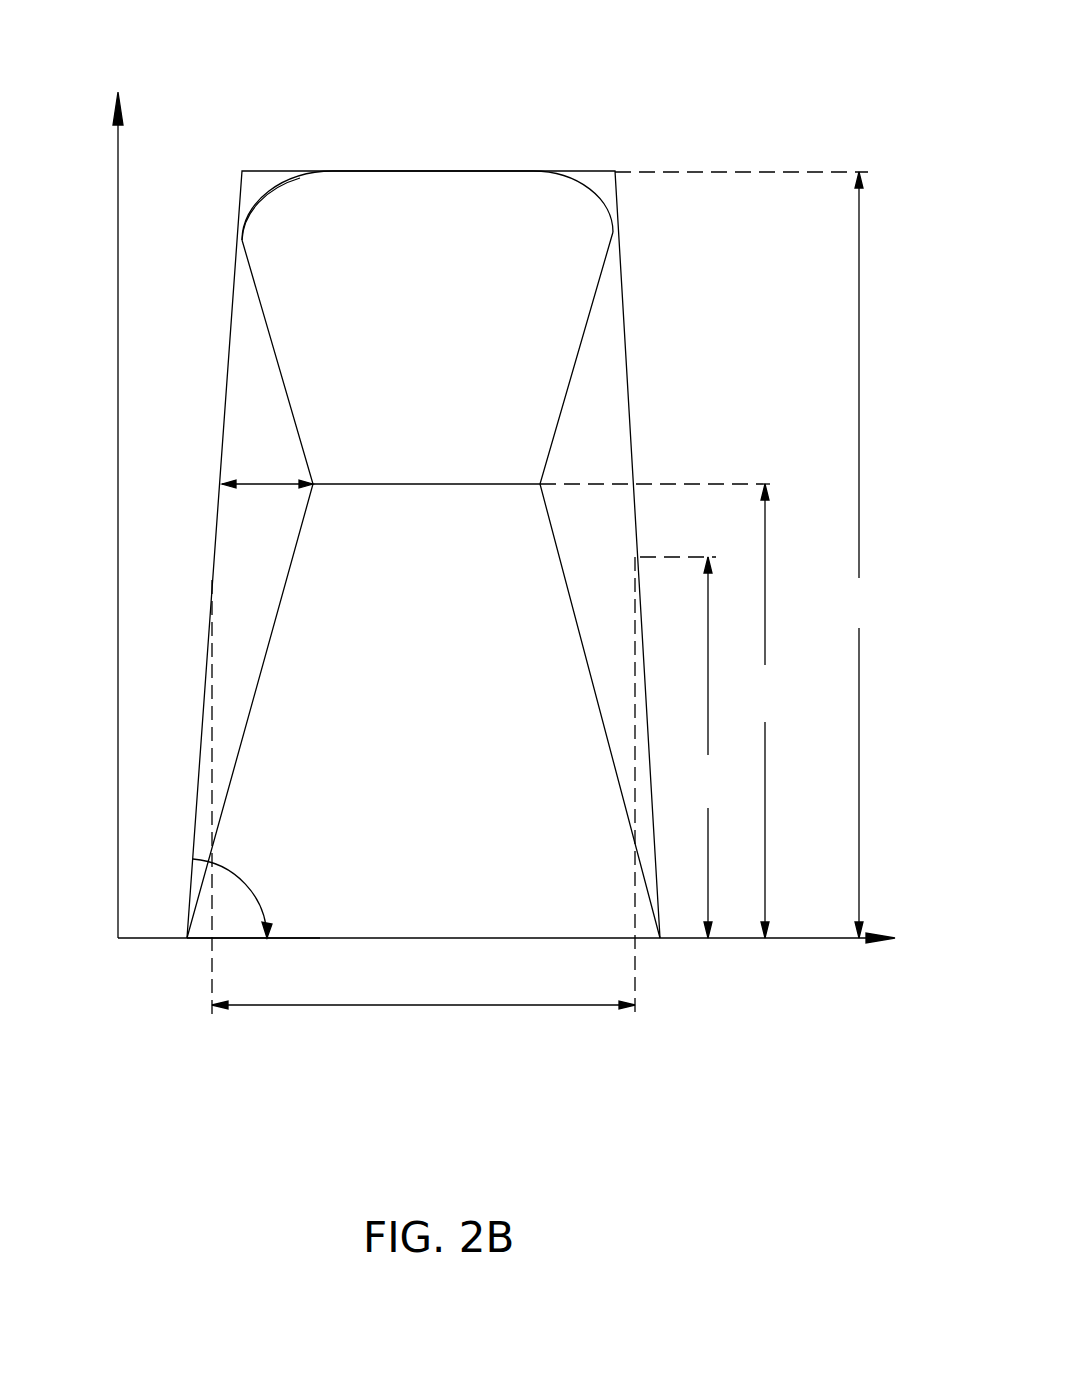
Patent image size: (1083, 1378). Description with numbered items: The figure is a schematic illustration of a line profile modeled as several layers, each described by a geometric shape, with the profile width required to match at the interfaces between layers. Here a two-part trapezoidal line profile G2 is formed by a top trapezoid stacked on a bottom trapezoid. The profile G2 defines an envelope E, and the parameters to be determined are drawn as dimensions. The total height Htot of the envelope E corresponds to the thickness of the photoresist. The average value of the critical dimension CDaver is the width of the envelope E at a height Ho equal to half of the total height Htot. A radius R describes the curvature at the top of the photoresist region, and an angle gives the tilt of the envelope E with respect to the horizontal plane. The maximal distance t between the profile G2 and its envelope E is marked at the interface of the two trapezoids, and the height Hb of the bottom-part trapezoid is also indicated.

The two-part trapezoidal line profile G2 is at (583, 107).
The radius of curvature R is at (277, 193).
The envelope E is at (625, 315).
The maximal distance t is at (267, 470).
The total height Htot is at (870, 555).
The height of the bottom-part trapezoid Hb is at (771, 711).
The height Ho is at (713, 747).
The average value of the critical dimension CDaver is at (423, 1029).